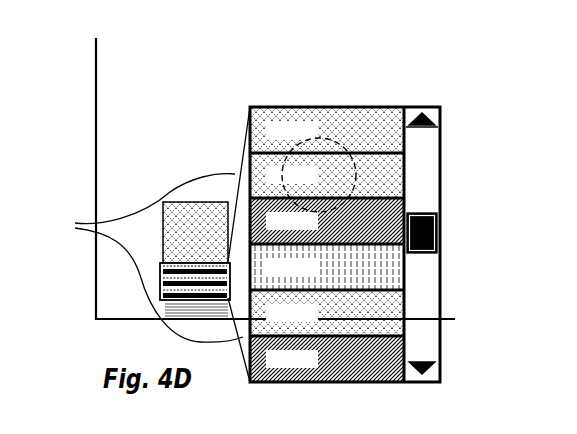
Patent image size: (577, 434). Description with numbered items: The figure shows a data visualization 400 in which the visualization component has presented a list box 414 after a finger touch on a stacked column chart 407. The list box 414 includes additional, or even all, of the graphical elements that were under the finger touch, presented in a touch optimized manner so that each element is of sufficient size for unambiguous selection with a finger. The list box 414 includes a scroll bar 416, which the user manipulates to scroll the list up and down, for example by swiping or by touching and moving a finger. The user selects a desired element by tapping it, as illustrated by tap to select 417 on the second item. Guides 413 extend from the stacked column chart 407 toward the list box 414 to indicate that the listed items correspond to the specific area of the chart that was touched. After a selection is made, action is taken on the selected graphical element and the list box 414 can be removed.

The data visualization 400 is at (163, 85).
The stacked column chart 407 is at (185, 202).
The guides 413 is at (139, 258).
The list box 414 is at (298, 107).
The scroll bar 416 is at (440, 348).
The tap to select 417 is at (340, 145).